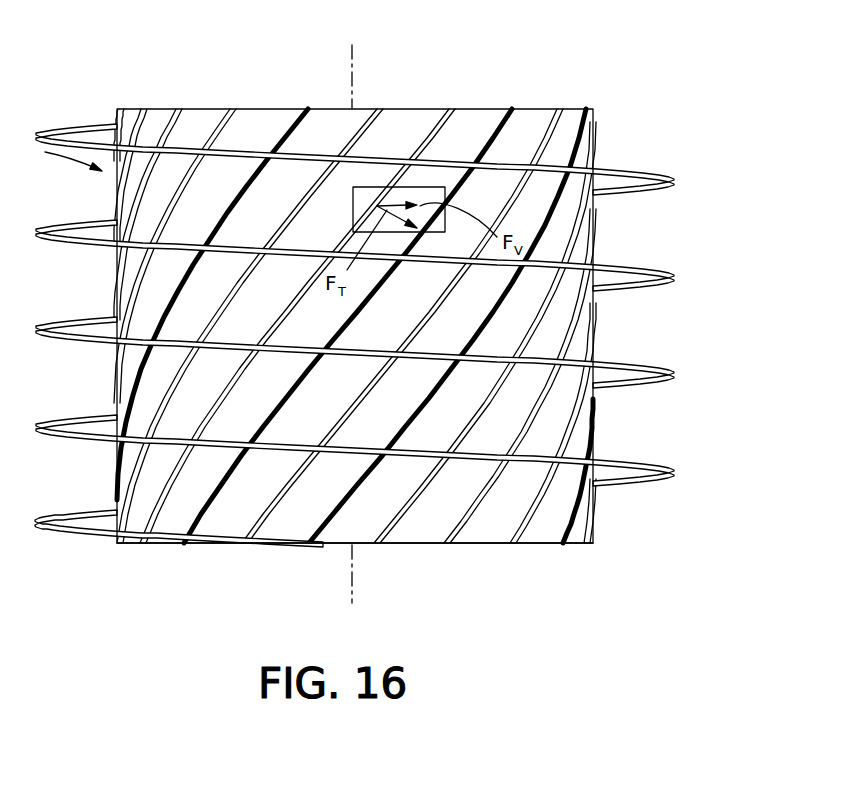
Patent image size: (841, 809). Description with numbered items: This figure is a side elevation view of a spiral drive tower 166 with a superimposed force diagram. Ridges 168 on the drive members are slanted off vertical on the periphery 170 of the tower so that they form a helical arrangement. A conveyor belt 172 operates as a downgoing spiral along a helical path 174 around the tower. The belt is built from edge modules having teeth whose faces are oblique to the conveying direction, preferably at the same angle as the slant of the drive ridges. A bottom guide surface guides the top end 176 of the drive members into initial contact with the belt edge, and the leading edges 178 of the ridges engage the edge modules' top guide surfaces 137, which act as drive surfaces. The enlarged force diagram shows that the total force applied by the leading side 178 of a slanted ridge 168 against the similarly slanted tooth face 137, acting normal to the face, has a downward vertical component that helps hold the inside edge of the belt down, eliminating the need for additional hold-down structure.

The drive tower 166 is at (446, 68).
The top end 176 is at (232, 108).
The leading edge 178 is at (345, 238).
The top guide surface 137 is at (381, 188).
The helical path 174 is at (638, 186).
The conveyor belt 172 is at (680, 473).
The ridge 168 is at (516, 537).
The periphery 170 is at (473, 540).